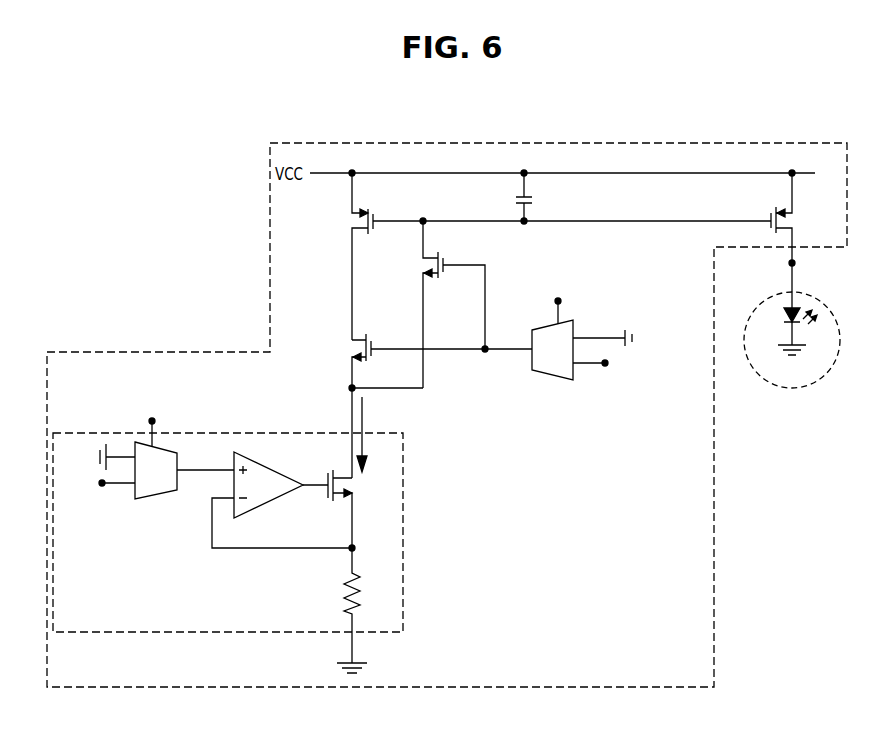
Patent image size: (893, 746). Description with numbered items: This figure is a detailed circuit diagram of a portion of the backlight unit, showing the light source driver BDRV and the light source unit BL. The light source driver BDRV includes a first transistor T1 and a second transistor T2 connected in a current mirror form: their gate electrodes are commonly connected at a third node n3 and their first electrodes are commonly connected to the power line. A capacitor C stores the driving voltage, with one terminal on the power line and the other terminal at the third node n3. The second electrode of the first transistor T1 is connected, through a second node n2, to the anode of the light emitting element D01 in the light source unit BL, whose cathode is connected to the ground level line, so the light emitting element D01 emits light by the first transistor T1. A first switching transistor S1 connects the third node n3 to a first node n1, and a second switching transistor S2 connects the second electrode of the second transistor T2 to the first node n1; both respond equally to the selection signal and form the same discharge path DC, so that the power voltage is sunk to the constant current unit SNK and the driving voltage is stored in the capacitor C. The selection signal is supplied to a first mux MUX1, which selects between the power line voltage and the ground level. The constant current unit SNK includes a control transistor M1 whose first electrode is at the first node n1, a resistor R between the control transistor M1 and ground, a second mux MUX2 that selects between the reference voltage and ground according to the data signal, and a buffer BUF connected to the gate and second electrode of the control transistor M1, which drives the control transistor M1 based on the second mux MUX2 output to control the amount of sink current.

The first transistor T1 is at (794, 218).
The second transistor T2 is at (349, 256).
The first switching transistor S1 is at (442, 304).
The second switching transistor S2 is at (429, 361).
The control transistor M1 is at (351, 510).
The capacitor C is at (532, 197).
The resistor R is at (367, 613).
The light emitting element D01 is at (786, 321).
The first mux MUX1 is at (601, 327).
The second mux MUX2 is at (145, 446).
The buffer BUF is at (282, 500).
The constant current unit SNK is at (403, 530).
The light source driver BDRV is at (713, 527).
The light source unit BL is at (792, 388).
The first node n1 is at (369, 388).
The second node n2 is at (778, 263).
The third node n3 is at (529, 237).
The discharge path DC is at (372, 434).